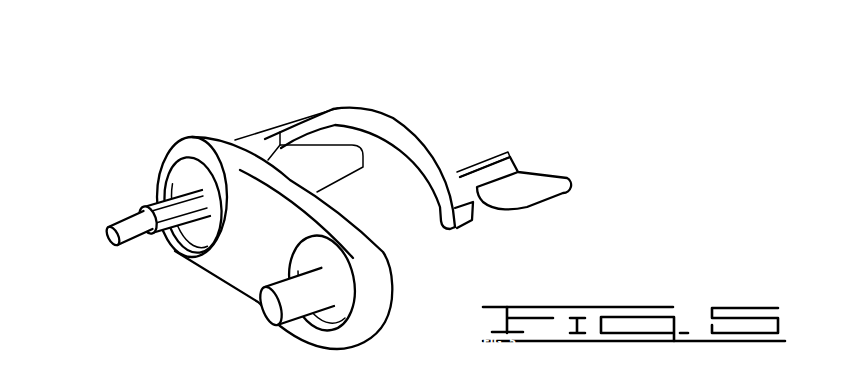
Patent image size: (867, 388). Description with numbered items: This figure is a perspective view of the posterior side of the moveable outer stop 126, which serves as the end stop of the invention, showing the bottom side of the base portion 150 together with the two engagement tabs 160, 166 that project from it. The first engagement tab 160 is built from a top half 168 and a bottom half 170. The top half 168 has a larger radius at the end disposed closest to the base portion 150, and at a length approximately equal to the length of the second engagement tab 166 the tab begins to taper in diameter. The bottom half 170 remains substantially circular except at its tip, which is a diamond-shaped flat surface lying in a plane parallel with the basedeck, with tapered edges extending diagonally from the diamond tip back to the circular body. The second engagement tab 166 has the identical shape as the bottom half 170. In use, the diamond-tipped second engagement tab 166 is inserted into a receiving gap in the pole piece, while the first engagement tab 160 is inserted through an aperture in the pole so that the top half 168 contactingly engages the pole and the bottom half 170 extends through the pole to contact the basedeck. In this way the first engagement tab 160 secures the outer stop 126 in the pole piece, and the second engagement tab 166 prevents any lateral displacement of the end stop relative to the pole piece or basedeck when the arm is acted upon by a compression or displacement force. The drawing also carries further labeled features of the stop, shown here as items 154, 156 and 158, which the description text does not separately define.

The moveable outer stop 126 is at (431, 159).
The base portion 150 is at (192, 158).
The spring clip arm 154 is at (420, 170).
The foot of clip 156 is at (462, 218).
The hook 158 is at (547, 187).
The first engagement tab 160 is at (131, 228).
The second engagement tab 166 is at (315, 293).
The top half 168 is at (172, 230).
The bottom half 170 is at (128, 248).